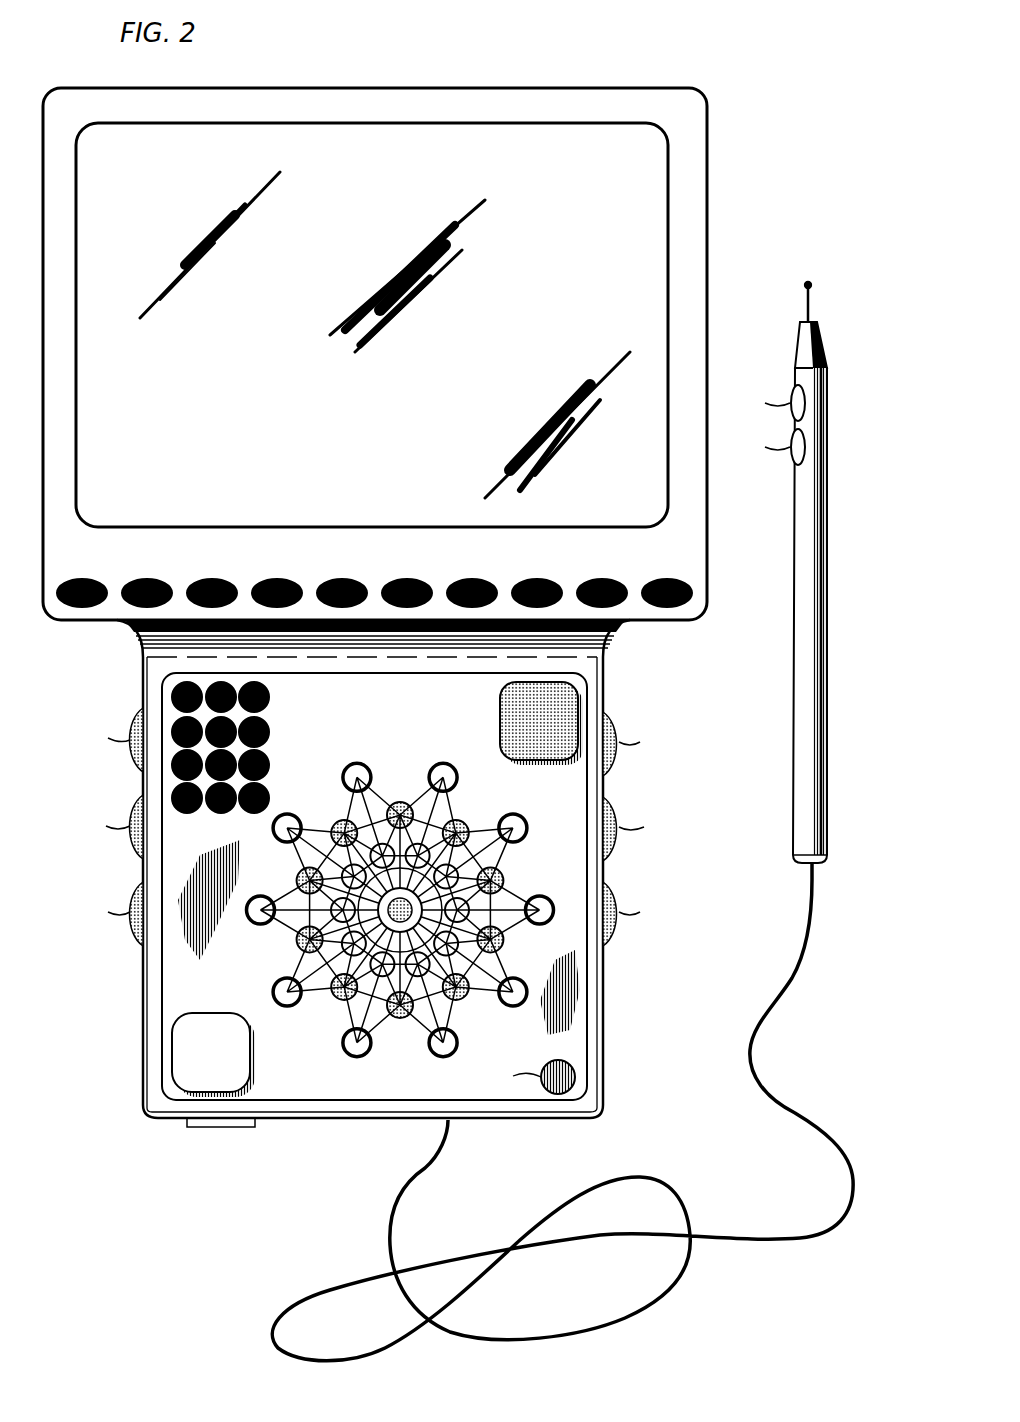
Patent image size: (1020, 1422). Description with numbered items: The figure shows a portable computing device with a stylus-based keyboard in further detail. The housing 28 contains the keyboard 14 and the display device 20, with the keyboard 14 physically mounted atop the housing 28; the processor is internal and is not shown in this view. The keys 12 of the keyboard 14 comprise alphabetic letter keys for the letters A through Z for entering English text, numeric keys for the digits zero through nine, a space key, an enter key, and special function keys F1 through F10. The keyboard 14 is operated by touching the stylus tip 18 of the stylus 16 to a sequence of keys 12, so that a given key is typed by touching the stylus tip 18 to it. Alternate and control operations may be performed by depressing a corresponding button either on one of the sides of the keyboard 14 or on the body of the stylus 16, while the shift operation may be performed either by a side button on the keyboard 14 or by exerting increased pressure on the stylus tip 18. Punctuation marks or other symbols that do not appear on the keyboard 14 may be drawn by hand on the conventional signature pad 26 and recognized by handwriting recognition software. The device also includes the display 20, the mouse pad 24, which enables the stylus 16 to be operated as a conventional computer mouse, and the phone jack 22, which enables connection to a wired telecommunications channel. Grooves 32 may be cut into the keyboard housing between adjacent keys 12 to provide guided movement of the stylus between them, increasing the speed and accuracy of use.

In FIG. 2, the keys 12 is at (95, 580).
In FIG. 2, the keyboard 14 is at (580, 1022).
The stylus 16 is at (798, 742).
The stylus tip 18 is at (805, 295).
In FIG. 2, the display device 20 is at (655, 216).
In FIG. 2, the phone jack 22 is at (240, 1128).
In FIG. 2, the mouse pad 24 is at (250, 1058).
In FIG. 2, the signature pad 26 is at (500, 698).
In FIG. 2, the housing 28 is at (603, 982).
In FIG. 2, the grooves 32 is at (495, 904).